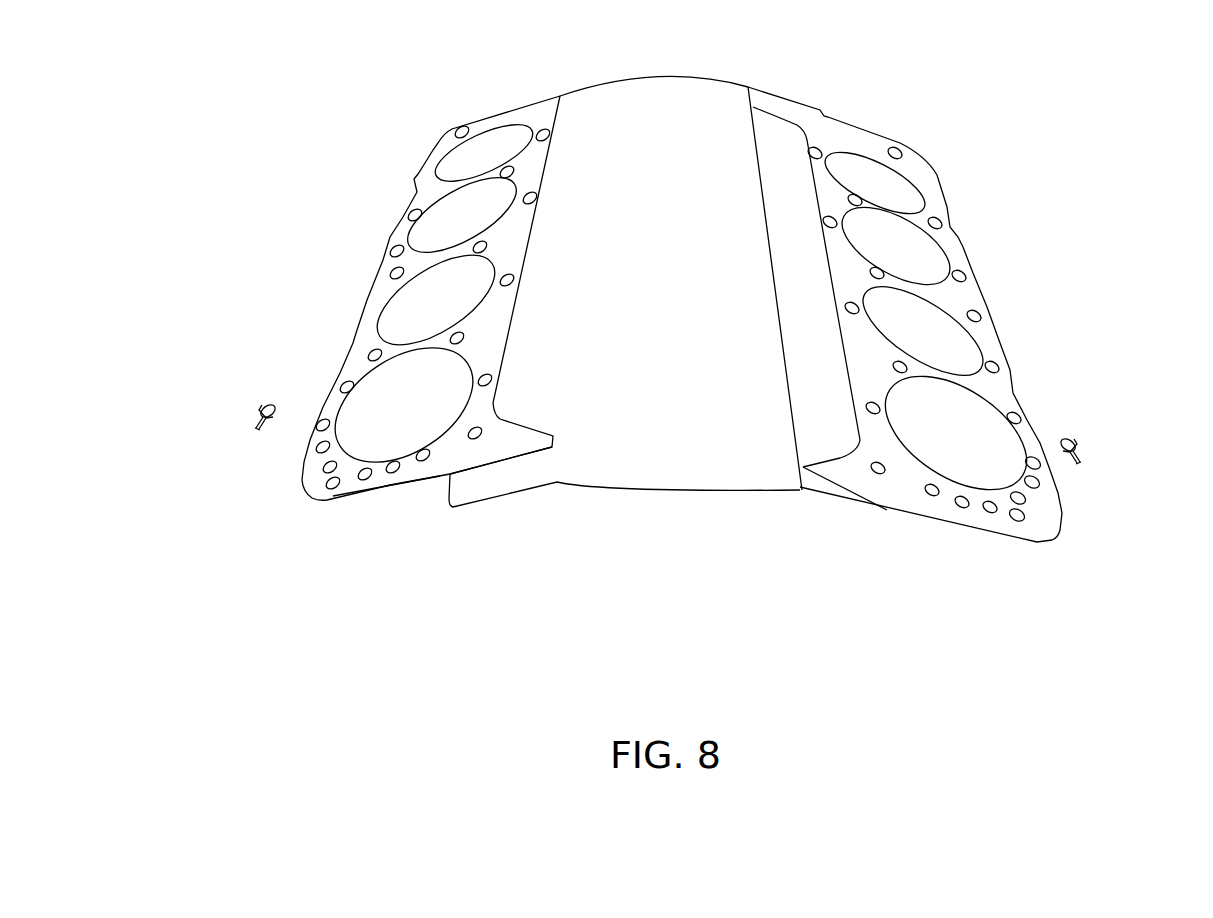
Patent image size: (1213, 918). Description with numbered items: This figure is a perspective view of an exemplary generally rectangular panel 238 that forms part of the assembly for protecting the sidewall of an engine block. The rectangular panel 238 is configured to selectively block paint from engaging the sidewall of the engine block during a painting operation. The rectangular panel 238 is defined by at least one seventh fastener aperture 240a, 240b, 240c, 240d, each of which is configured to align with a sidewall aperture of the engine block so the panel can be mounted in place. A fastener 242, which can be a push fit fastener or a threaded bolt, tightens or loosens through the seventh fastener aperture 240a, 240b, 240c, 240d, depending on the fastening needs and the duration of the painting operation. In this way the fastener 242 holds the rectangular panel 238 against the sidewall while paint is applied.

The rectangular panel 238 is at (697, 328).
The seventh fastener aperture 240a is at (400, 249).
The seventh fastener aperture 240b is at (333, 485).
The seventh fastener aperture 240c is at (972, 313).
The seventh fastener aperture 240d is at (1017, 517).
The fastener 242 is at (263, 432).